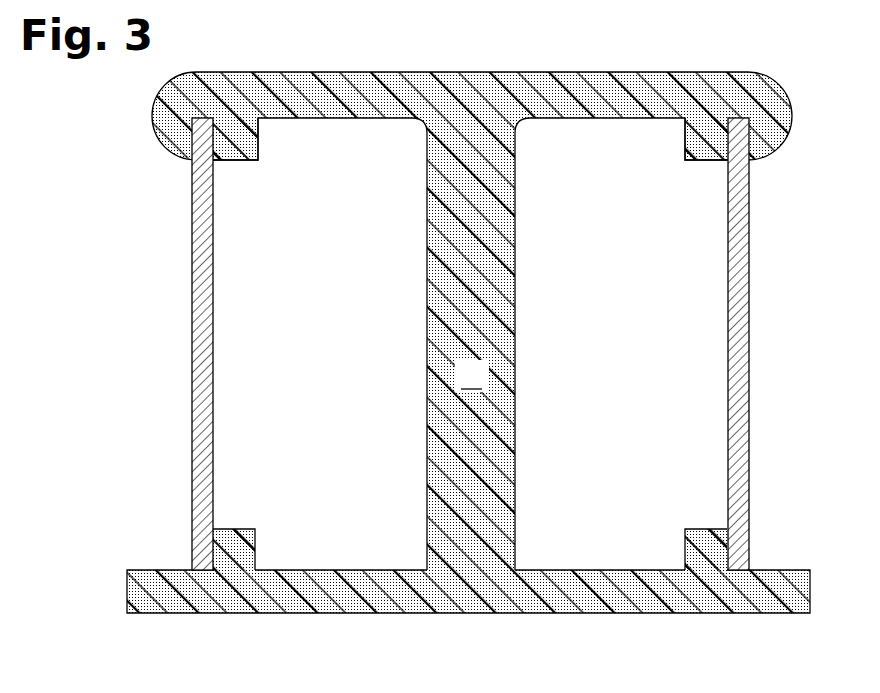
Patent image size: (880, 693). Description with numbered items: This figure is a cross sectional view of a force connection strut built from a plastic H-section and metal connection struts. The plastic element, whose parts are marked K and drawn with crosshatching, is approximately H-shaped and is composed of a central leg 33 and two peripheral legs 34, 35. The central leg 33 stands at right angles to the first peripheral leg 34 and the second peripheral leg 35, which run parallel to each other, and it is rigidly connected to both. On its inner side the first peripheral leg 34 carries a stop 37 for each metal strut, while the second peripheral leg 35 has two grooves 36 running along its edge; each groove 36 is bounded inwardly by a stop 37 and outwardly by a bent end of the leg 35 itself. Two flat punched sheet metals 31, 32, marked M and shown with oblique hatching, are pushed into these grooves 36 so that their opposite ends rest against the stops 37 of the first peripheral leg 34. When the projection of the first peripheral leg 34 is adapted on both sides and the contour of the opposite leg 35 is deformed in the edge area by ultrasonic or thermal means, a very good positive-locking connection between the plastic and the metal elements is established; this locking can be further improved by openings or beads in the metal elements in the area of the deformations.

The flat punched sheet metal 31 is at (190, 397).
The flat punched sheet metal 32 is at (750, 360).
The central leg 33 is at (442, 344).
The first peripheral leg 34 is at (350, 614).
The second peripheral leg 35 is at (358, 71).
The groove 36 is at (178, 153).
The stop 37 is at (245, 162).
The metal part designation M is at (210, 322).
The plastic part designation K is at (472, 376).